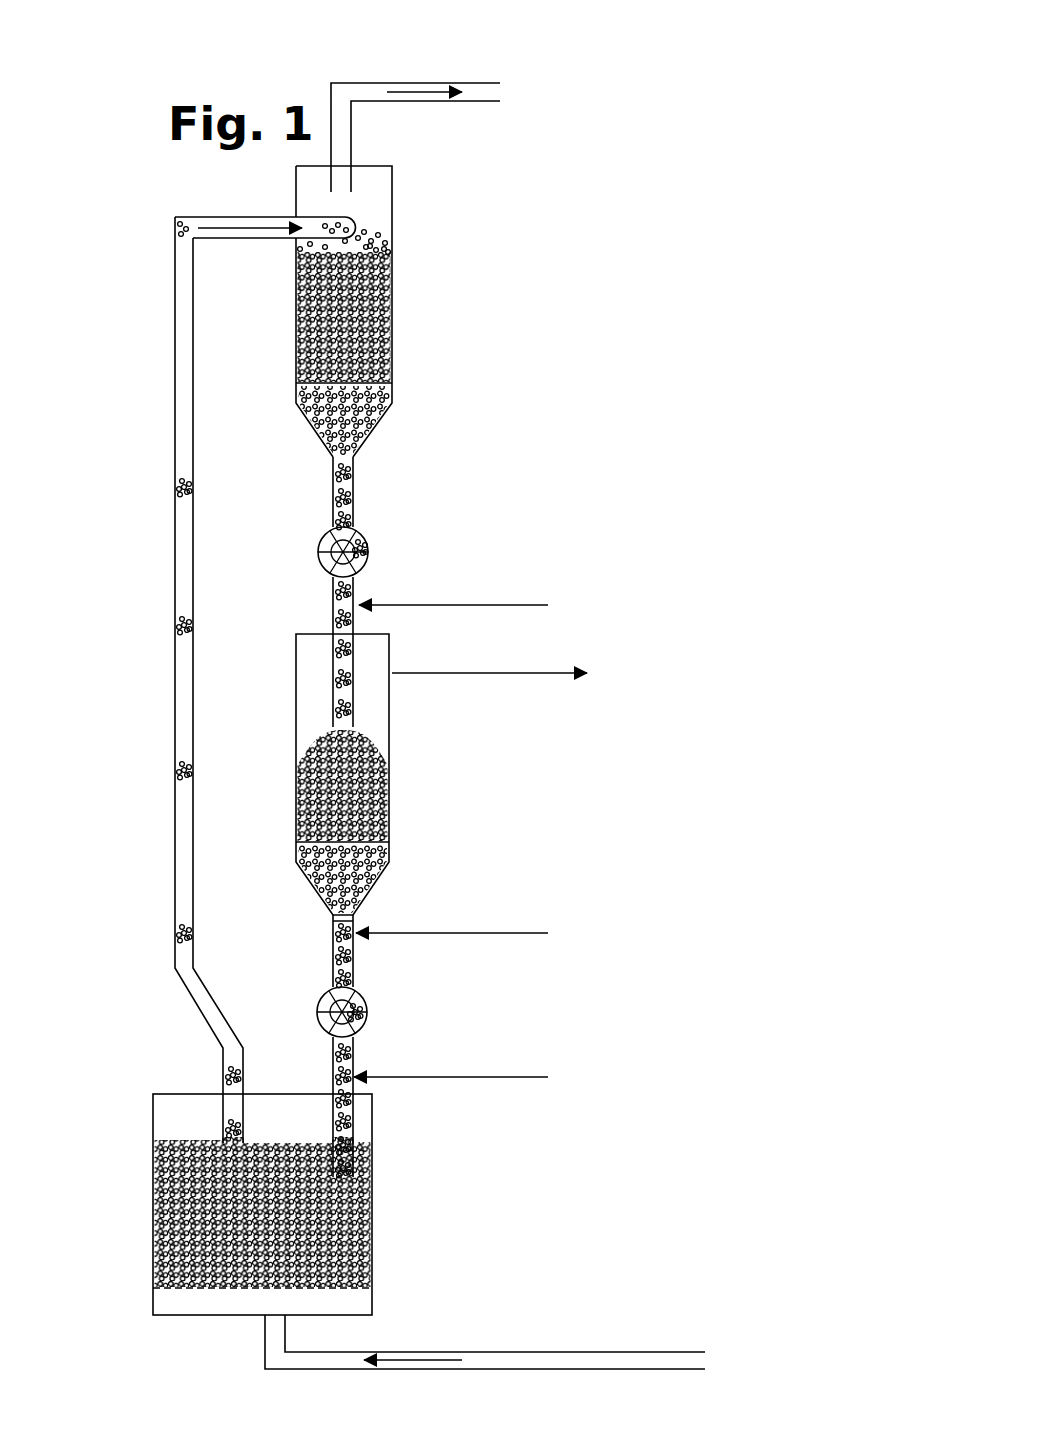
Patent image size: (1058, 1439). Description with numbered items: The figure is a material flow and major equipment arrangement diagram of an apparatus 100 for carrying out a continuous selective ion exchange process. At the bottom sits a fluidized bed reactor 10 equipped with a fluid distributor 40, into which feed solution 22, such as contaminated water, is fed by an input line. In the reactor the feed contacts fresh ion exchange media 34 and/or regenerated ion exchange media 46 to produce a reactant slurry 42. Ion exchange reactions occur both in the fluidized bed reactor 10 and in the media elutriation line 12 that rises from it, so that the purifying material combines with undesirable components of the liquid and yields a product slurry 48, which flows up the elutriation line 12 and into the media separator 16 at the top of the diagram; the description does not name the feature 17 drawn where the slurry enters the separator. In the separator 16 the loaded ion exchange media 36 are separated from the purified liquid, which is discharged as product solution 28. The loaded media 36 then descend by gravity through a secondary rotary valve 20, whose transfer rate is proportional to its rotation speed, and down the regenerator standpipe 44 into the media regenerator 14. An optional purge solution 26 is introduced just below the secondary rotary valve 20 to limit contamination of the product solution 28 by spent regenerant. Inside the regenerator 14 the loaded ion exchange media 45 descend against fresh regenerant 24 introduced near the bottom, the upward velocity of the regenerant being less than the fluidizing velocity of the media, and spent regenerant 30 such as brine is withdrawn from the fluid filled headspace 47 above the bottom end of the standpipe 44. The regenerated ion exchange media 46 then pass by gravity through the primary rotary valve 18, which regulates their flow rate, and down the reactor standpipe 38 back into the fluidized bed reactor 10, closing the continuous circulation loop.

The apparatus 100 is at (719, 63).
The fluidized bed reactor 10 is at (372, 1225).
The media elutriation line 12 is at (178, 835).
The media regenerator 14 is at (389, 790).
The media separator 16 is at (392, 313).
The beads entering first vessel 17 is at (393, 258).
The primary rotary valve 18 is at (363, 1005).
The secondary rotary valve 20 is at (360, 530).
The feed solution 22 is at (422, 1358).
The fresh regenerant 24 is at (448, 934).
The purge solution 26 is at (450, 604).
The product solution 28 is at (422, 97).
The spent regenerant 30 is at (490, 675).
The fresh ion exchange media 34 is at (450, 1077).
The loaded ion exchange media 36 is at (347, 418).
The reactor standpipe 38 is at (353, 1120).
The fluid distributor 40 is at (185, 1290).
The reactant slurry 42 is at (153, 1225).
The regenerator standpipe 44 is at (329, 660).
The loaded ion exchange media 45 is at (390, 816).
The regenerated ion exchange media 46 is at (333, 968).
The fluid filled headspace 47 is at (306, 706).
The product slurry 48 is at (220, 232).